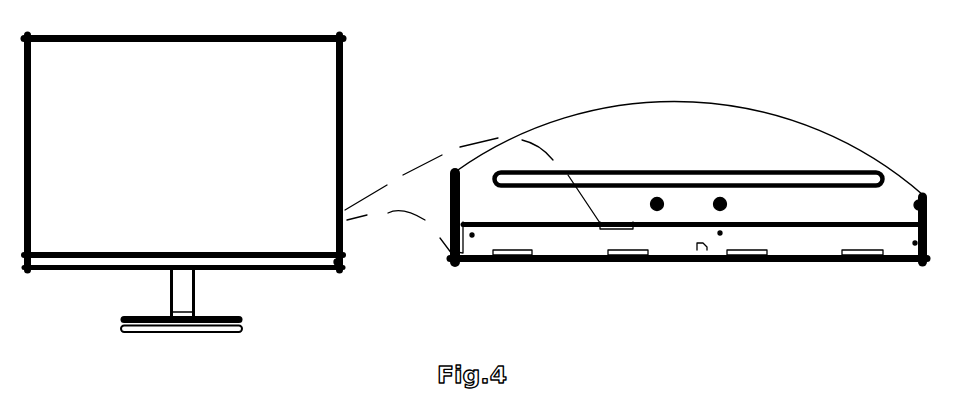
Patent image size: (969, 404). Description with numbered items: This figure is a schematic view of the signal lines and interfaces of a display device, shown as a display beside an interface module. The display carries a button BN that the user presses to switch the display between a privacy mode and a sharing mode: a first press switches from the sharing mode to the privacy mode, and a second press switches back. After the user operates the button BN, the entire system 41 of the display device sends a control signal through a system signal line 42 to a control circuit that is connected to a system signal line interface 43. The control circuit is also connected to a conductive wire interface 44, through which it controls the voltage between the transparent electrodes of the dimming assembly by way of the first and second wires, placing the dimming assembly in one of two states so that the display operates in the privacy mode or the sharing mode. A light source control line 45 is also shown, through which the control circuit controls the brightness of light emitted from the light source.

The entire system 41 is at (345, 186).
The system signal line 42 is at (482, 142).
The system signal line interface 43 is at (617, 227).
The conductive wire interface 44 is at (703, 247).
The light source control line 45 is at (378, 213).
The button BN is at (343, 265).